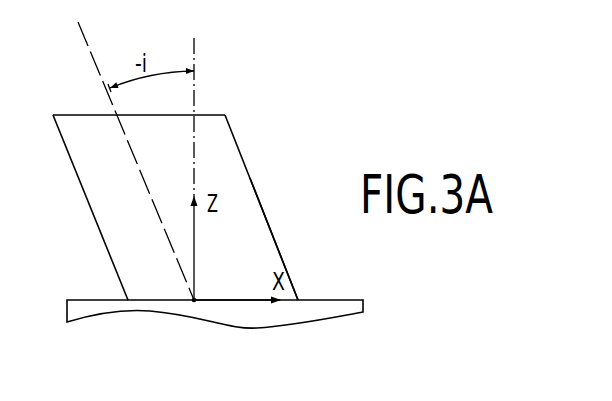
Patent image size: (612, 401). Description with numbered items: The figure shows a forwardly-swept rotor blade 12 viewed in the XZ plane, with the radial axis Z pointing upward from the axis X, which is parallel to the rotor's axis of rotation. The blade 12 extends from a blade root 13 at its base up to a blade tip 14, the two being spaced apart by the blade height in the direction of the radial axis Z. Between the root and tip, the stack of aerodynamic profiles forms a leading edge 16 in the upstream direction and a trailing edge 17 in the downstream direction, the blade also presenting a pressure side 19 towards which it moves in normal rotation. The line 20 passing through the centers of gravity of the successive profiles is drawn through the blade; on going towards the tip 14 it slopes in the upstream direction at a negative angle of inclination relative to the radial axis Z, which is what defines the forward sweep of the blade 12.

The blade 12 is at (188, 185).
The blade root 13 is at (157, 300).
The blade tip 14 is at (78, 114).
The leading edge 16 is at (97, 226).
The trailing edge 17 is at (252, 178).
The pressure side 19 is at (242, 225).
The line passing through the centers of gravity 20 is at (87, 40).